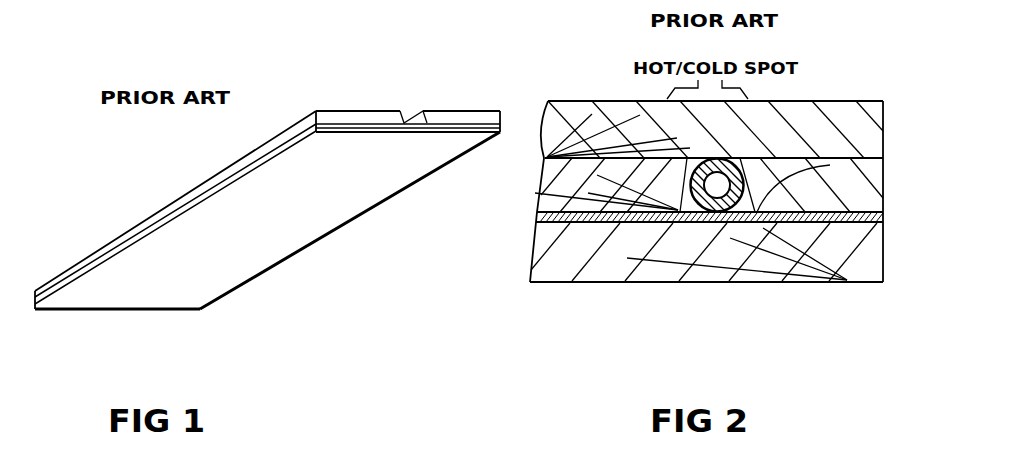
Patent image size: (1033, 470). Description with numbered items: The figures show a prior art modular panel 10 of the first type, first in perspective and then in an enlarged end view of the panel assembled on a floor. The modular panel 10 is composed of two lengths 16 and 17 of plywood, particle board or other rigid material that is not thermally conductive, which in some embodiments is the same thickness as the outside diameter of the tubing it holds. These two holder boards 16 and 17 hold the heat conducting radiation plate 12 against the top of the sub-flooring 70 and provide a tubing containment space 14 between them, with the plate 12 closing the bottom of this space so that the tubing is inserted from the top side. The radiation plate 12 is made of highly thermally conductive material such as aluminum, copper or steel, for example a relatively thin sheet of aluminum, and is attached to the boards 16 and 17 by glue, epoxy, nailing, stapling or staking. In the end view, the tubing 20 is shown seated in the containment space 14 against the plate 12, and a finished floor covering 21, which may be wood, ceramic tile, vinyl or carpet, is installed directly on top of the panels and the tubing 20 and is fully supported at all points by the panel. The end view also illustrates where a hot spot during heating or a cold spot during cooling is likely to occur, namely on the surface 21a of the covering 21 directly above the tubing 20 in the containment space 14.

In FIG. 1, the modular panel 10 is at (97, 340).
In FIG. 2, the modular panel 10 is at (592, 315).
In FIG. 1, the radiation plate 12 is at (290, 215).
In FIG. 2, the radiation plate 12 is at (763, 223).
In FIG. 1, the tubing containment space 14 is at (409, 92).
In FIG. 2, the tubing containment space 14 is at (685, 122).
In FIG. 1, the holder board 16 is at (455, 111).
In FIG. 2, the holder board 16 is at (863, 192).
In FIG. 1, the holder board 17 is at (364, 111).
In FIG. 2, the holder board 17 is at (556, 192).
In FIG. 2, the solder ball 20 is at (735, 157).
In FIG. 1, the finished floor covering 21 is at (521, 137).
In FIG. 2, the surface of the covering 21a is at (550, 155).
In FIG. 2, the sub-flooring 70 is at (718, 283).